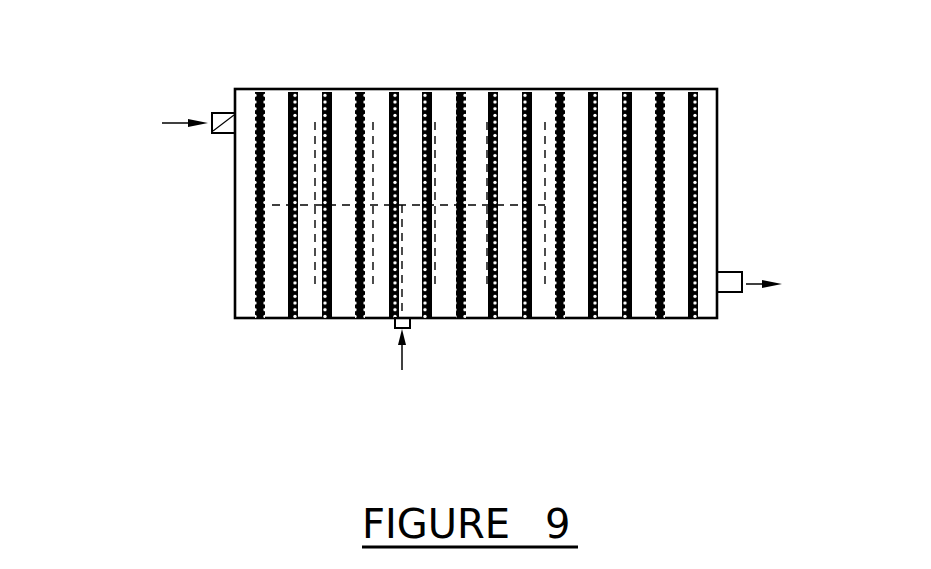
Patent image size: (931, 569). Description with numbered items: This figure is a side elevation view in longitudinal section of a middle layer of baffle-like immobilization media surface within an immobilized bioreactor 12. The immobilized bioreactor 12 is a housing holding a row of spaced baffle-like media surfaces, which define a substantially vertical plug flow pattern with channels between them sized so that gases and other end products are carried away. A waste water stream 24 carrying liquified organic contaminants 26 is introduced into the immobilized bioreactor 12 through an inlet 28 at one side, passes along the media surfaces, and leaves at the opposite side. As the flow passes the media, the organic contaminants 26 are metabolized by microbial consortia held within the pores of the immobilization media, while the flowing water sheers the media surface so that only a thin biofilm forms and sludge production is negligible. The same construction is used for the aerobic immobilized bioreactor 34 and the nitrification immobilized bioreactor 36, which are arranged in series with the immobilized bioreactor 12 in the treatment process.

The immobilized bioreactor 12 is at (551, 168).
The stream 24 is at (173, 117).
The organic contaminants 26 is at (683, 276).
The inlet 28 is at (222, 124).
The aerobic immobilized bioreactor 34 is at (561, 184).
The nitrification immobilized bioreactor 36 is at (700, 235).